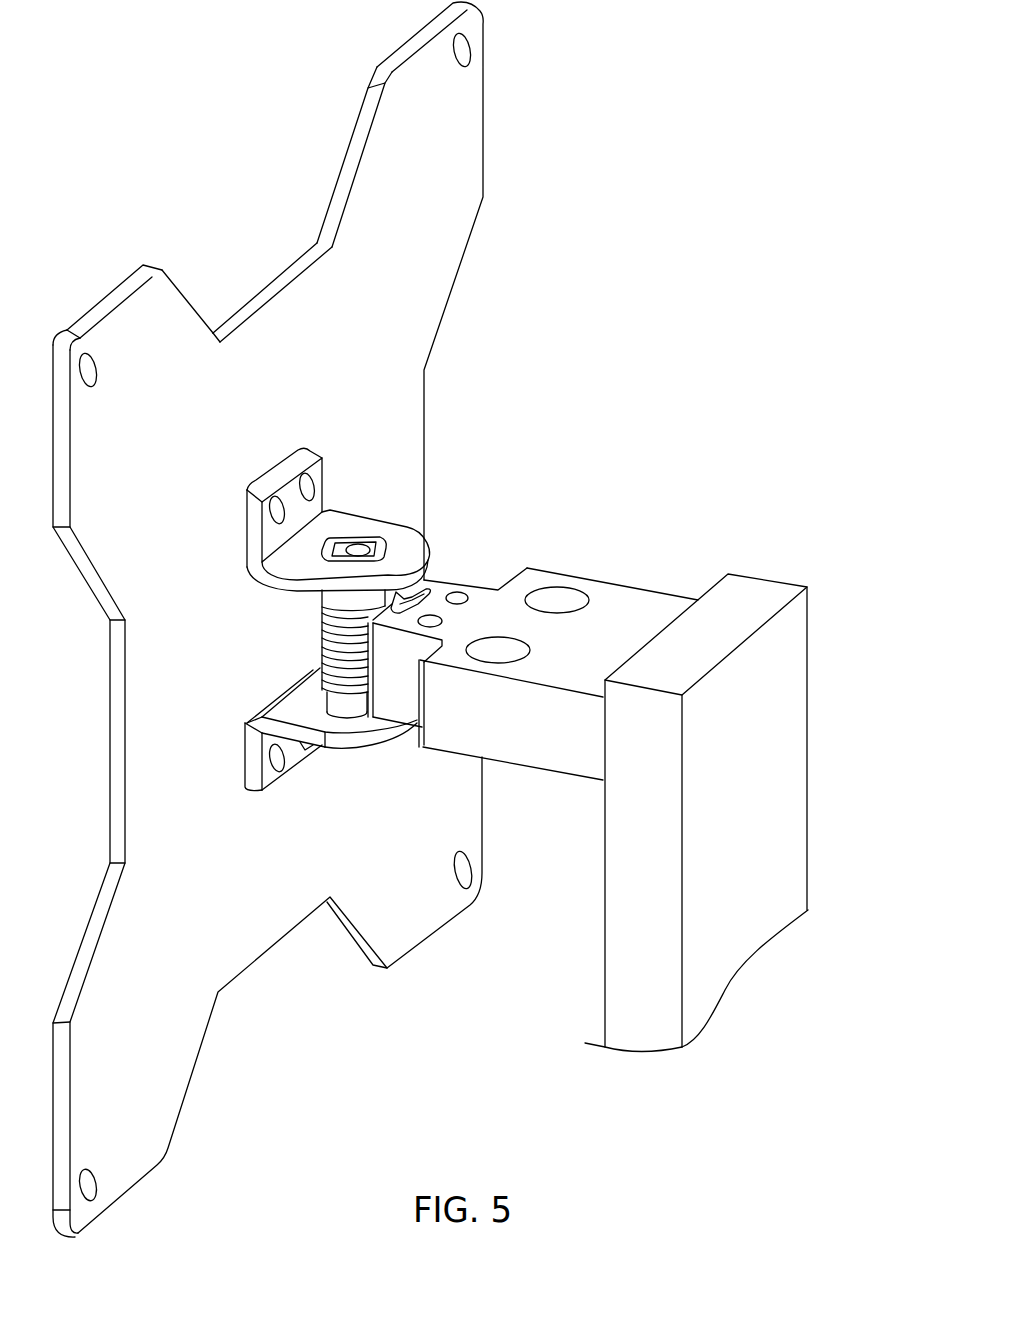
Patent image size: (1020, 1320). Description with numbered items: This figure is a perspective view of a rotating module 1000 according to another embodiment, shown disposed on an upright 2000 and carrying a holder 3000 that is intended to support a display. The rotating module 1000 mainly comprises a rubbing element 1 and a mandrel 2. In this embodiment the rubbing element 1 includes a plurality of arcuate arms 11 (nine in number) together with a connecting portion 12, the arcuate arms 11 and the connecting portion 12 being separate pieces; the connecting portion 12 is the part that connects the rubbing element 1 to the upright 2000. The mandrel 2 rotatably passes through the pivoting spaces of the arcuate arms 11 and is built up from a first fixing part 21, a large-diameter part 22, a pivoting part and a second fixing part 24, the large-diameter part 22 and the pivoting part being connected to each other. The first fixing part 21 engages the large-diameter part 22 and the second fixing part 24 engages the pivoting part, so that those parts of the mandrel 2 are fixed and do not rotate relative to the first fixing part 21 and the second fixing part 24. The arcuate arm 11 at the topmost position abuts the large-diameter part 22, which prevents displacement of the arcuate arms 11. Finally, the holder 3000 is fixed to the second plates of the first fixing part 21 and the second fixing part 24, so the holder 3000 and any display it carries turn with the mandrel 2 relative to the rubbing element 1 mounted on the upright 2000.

The rotating module 1000 is at (722, 110).
The upright 2000 is at (782, 718).
The holder 3000 is at (270, 322).
The rubbing element 1 is at (553, 555).
The arcuate arm 11 is at (320, 643).
The connecting portion 12 is at (472, 592).
The mandrel 2 is at (240, 800).
The first fixing part 21 is at (347, 520).
The large-diameter part 22 is at (300, 573).
The second fixing part 24 is at (280, 730).